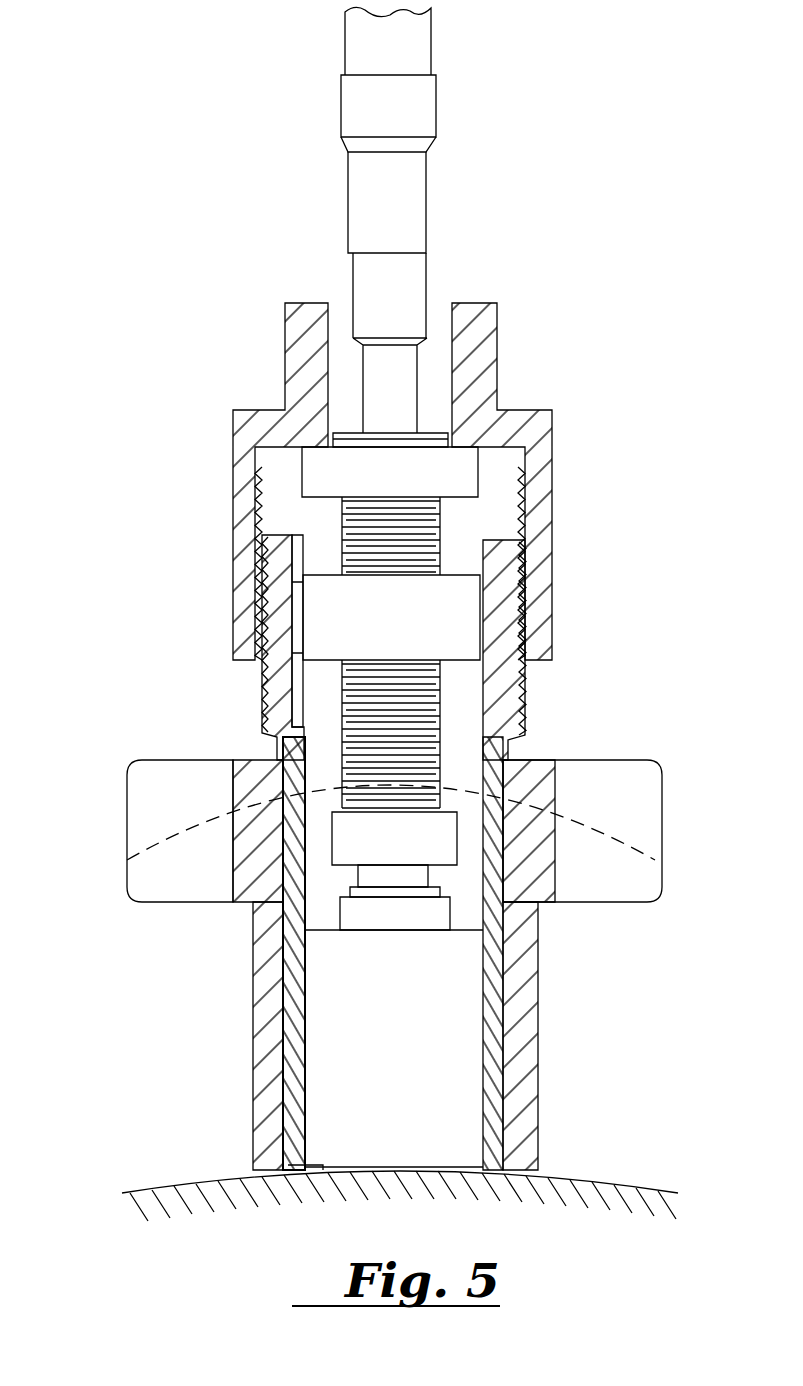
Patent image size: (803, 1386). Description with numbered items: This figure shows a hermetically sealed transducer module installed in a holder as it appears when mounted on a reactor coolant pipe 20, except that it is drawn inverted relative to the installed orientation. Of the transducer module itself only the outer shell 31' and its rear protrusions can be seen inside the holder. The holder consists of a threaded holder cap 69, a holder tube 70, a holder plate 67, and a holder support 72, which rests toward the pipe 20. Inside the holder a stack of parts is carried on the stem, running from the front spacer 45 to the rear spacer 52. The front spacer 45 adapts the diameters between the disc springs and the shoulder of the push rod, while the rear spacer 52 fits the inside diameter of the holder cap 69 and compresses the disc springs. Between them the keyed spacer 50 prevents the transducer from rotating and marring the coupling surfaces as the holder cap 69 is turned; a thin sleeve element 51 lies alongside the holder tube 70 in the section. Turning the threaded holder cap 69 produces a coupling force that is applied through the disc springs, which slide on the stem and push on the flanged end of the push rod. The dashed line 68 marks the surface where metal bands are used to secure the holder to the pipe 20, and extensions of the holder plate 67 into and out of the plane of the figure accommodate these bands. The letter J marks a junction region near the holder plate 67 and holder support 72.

The reactor coolant pipe 20 is at (613, 1173).
The outer shell 31' is at (385, 1050).
The front spacer 45 is at (407, 840).
The keyed spacer 50 is at (455, 622).
The split sleeve 51 is at (297, 612).
The rear spacer 52 is at (456, 478).
The holder plate 67 is at (160, 798).
The dashed line 68 is at (630, 843).
The holder cap 69 is at (243, 497).
The holder tube 70 is at (275, 688).
The holder support 72 is at (265, 980).
The joint J is at (503, 863).